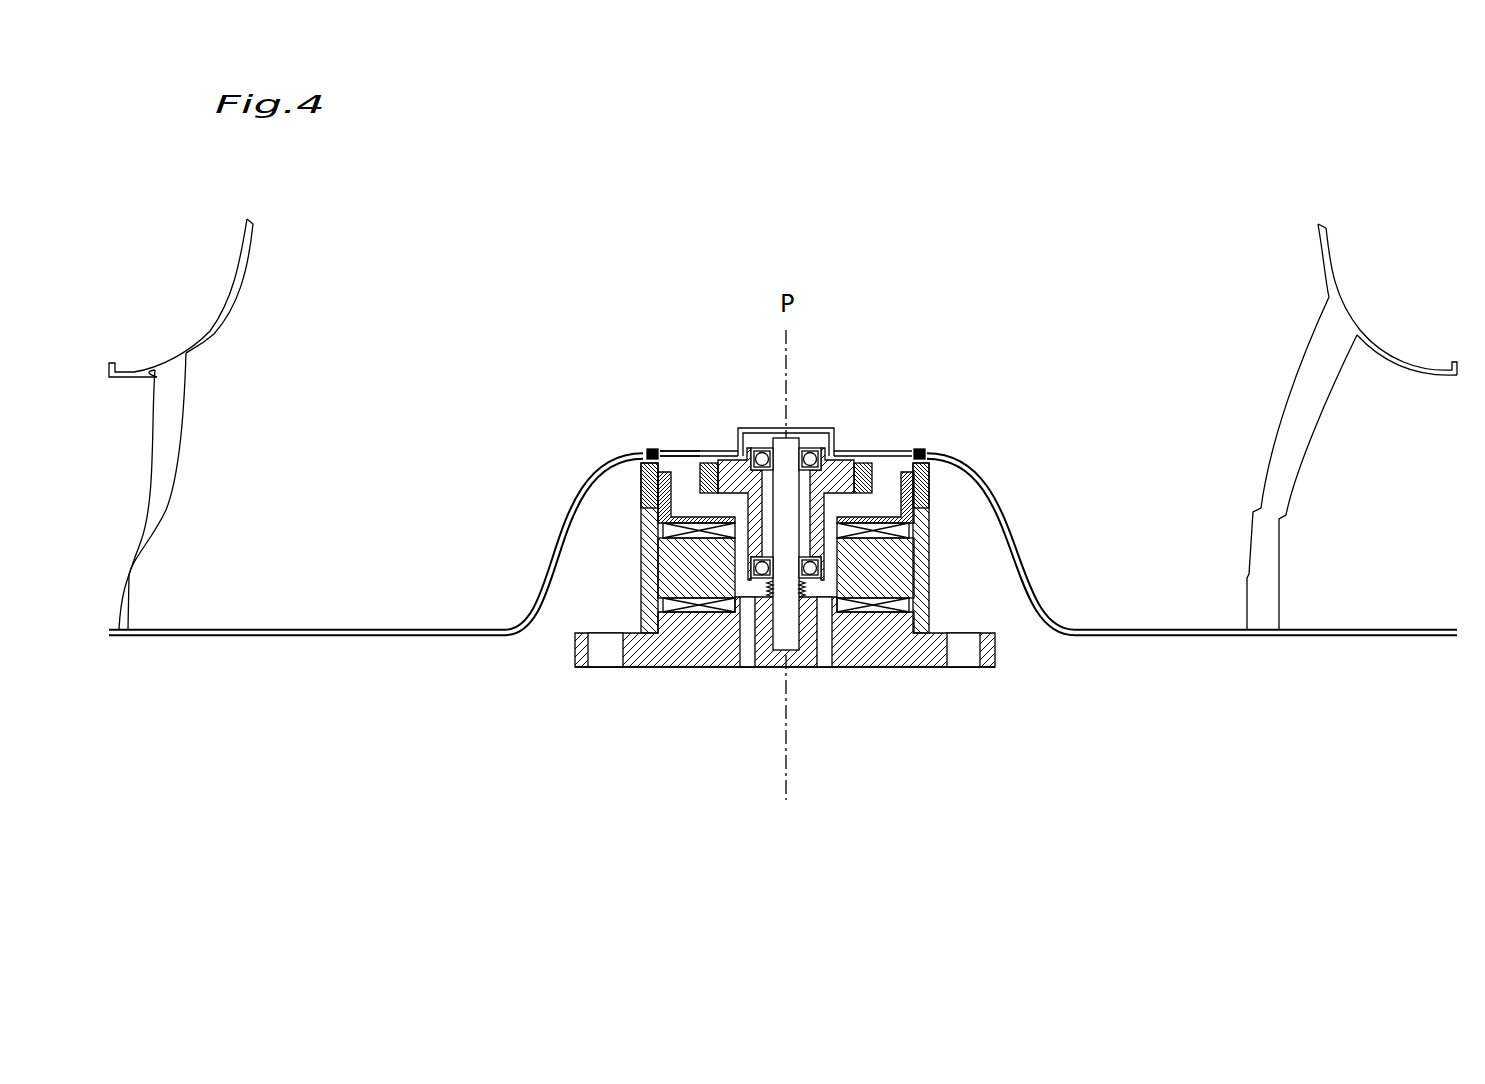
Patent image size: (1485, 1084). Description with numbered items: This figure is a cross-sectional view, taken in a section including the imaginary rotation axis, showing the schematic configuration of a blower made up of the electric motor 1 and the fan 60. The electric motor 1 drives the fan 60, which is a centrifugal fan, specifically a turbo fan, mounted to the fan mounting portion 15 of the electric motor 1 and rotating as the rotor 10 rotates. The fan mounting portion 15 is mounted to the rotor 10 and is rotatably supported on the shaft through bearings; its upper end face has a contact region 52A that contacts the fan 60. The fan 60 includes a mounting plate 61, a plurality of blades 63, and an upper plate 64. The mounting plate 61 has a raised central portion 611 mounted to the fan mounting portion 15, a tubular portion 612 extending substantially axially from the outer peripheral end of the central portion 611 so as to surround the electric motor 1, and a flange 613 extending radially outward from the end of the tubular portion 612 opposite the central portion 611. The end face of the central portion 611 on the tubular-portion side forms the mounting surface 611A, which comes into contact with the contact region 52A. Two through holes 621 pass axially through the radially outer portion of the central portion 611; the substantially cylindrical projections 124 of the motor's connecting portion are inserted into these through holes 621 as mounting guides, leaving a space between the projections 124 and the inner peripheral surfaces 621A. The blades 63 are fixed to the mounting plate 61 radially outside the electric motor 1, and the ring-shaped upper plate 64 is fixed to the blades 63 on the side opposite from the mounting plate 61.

The electric motor 1 is at (705, 676).
The rotor 10 is at (944, 595).
The fan mounting portion 15 is at (641, 480).
The contact region 52A is at (727, 451).
The fan 60 is at (783, 523).
The mounting plate 61 is at (1200, 637).
The tubular portion 612 is at (568, 500).
The flange 613 is at (360, 629).
The blades 63 is at (1276, 580).
The upper plate 64 is at (1332, 242).
The central portion 611 is at (712, 451).
The mounting surface 611A is at (703, 490).
The through holes 621 is at (675, 451).
The inner peripheral surfaces 621A is at (648, 450).
The projections 124 is at (653, 449).